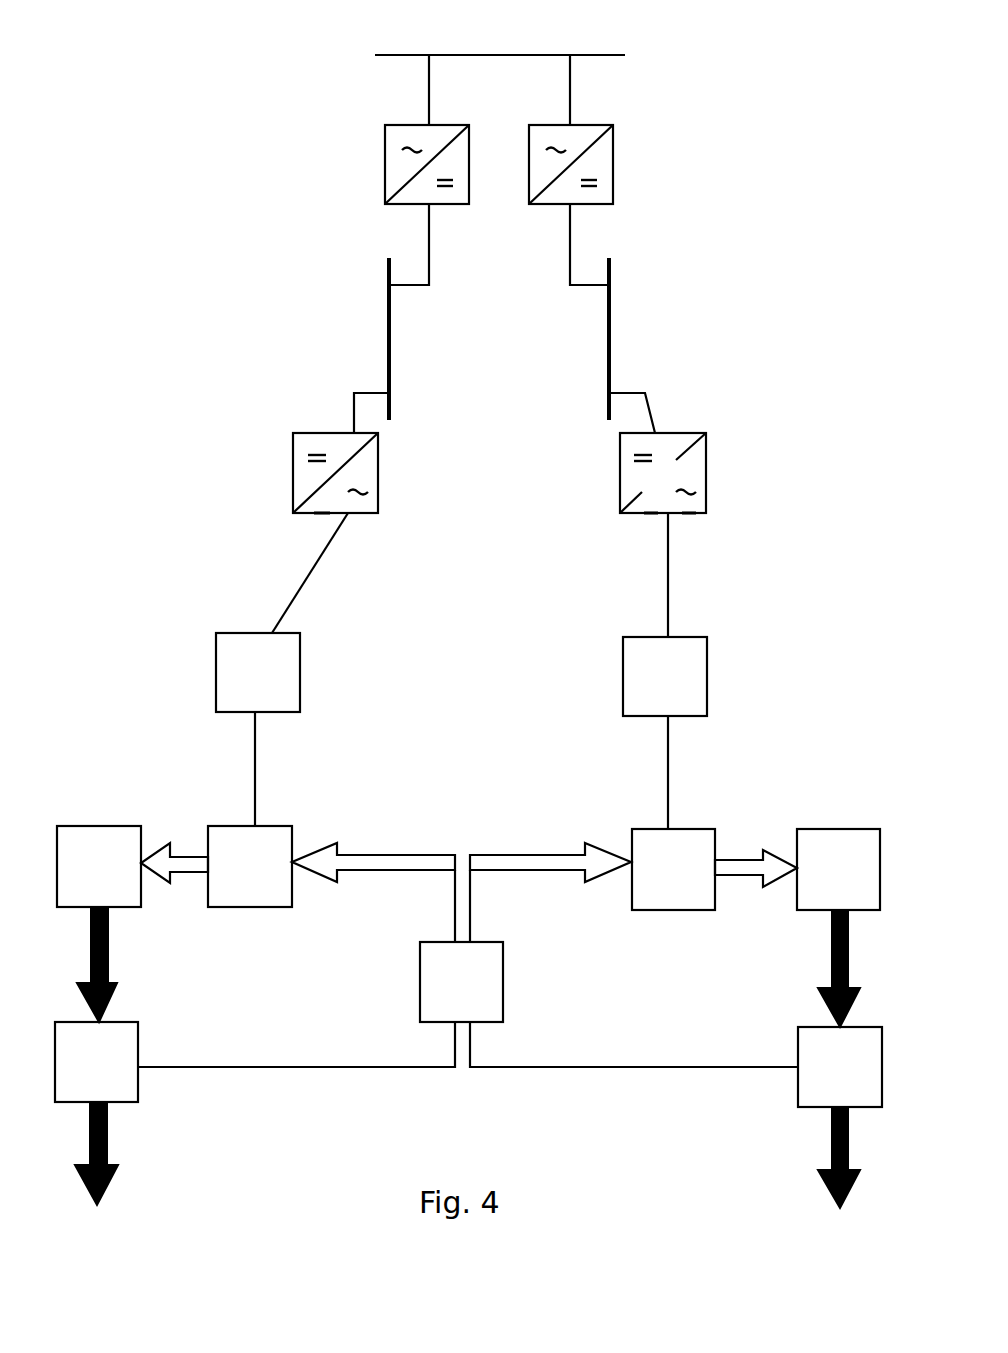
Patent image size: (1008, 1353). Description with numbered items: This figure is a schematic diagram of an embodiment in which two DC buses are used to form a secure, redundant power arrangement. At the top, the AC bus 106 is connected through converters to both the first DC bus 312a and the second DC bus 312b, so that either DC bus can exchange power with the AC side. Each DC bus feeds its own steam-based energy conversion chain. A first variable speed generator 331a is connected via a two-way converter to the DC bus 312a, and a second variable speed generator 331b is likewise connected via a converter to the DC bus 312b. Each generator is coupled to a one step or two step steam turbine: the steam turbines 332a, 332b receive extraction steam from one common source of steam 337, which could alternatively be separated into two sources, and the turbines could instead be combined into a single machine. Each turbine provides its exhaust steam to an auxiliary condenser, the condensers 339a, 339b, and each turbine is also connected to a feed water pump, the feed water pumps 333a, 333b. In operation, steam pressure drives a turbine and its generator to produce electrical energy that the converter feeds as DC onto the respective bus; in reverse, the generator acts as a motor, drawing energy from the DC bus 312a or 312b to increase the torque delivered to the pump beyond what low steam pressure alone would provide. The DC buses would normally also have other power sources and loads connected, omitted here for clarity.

The AC bus 106 is at (488, 55).
The first DC bus 312a is at (389, 310).
The second DC bus 312b is at (612, 318).
The first variable speed generator 331a is at (258, 729).
The second variable speed generator 331b is at (665, 733).
The first steam turbine 332a is at (250, 866).
The second steam turbine 332b is at (503, 869).
The first feed water pump 333a is at (96, 1113).
The second feed water pump 333b is at (840, 1117).
The extraction steam source 337 is at (468, 968).
The first condenser 339a is at (132, 924).
The second condenser 339b is at (797, 928).